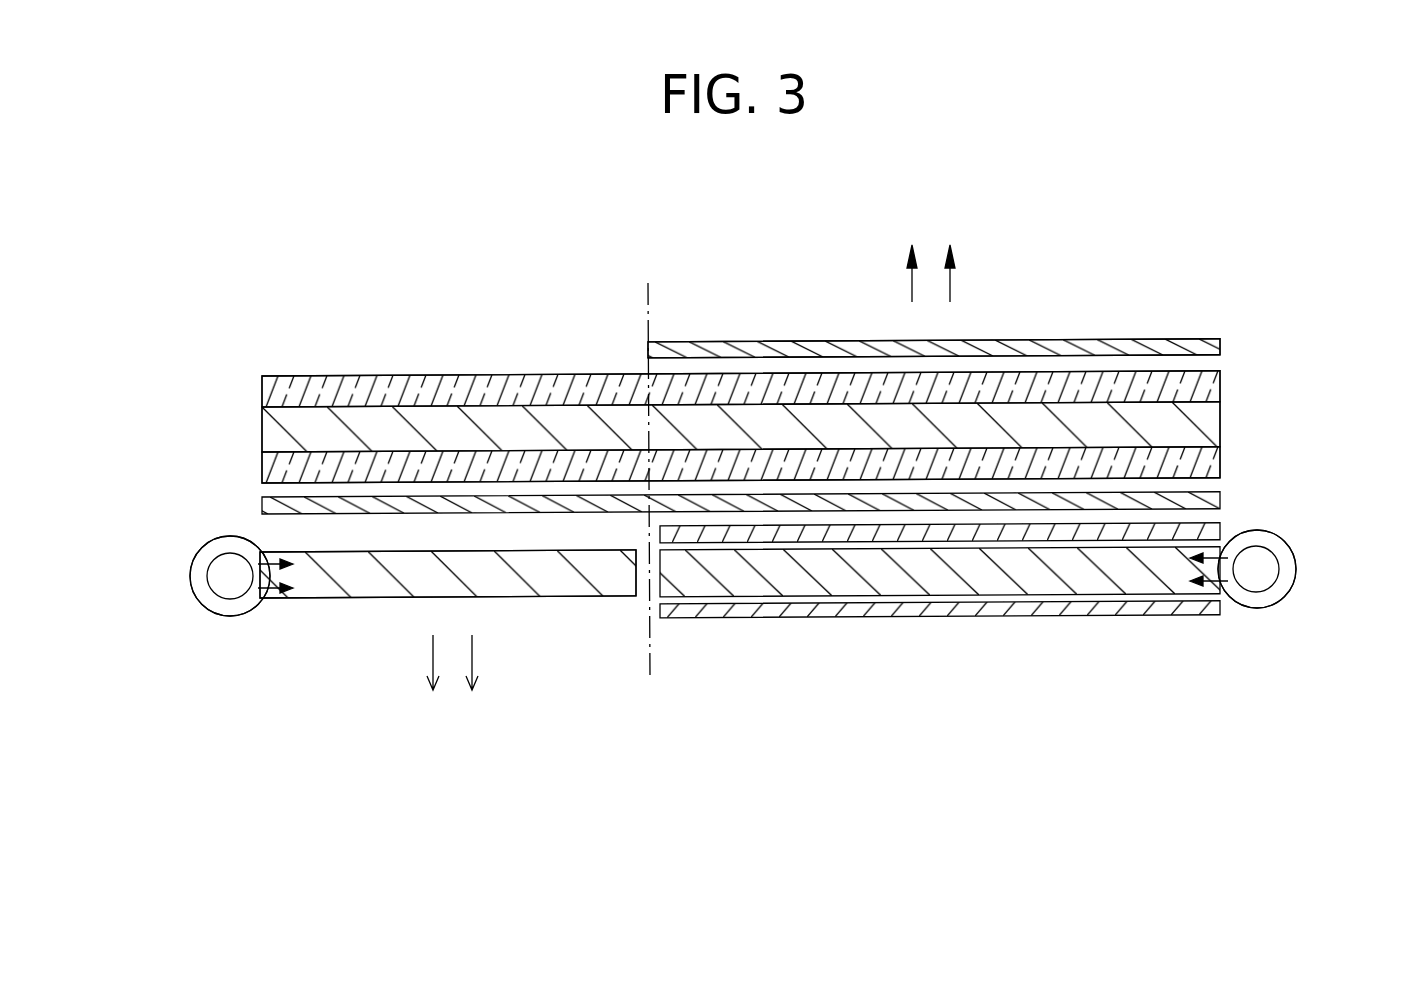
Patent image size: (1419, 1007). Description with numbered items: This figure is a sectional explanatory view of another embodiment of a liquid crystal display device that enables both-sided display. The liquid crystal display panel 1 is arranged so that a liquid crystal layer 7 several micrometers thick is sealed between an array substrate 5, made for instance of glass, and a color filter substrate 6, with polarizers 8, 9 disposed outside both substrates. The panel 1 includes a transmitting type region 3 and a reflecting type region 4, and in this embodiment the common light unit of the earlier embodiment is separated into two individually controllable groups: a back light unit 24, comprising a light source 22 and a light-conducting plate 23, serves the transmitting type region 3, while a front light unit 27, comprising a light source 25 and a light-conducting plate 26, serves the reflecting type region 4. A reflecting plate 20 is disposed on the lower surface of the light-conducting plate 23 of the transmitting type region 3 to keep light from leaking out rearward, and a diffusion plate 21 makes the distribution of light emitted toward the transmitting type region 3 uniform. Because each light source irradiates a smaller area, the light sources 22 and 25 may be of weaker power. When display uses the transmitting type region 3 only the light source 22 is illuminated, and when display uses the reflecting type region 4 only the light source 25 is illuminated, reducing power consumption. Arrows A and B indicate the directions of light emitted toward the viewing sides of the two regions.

The liquid crystal display panel 1 is at (203, 424).
The transmitting type region 3 is at (1029, 282).
The reflecting type region 4 is at (569, 665).
The array substrate 5 is at (293, 393).
The color filter substrate 6 is at (272, 472).
The liquid crystal layer 7 is at (273, 430).
The polarizer 8 is at (272, 507).
The polarizer 9 is at (742, 348).
The reflecting plate 20 is at (1173, 608).
The diffusion plate 21 is at (1215, 535).
The light source 22 is at (1257, 575).
The light-conducting plate 23 is at (938, 583).
The back light unit 24 is at (1320, 596).
The light source 25 is at (230, 578).
The light-conducting plate 26 is at (363, 585).
The front light unit 27 is at (158, 603).
The direction A is at (912, 285).
The direction B is at (472, 650).